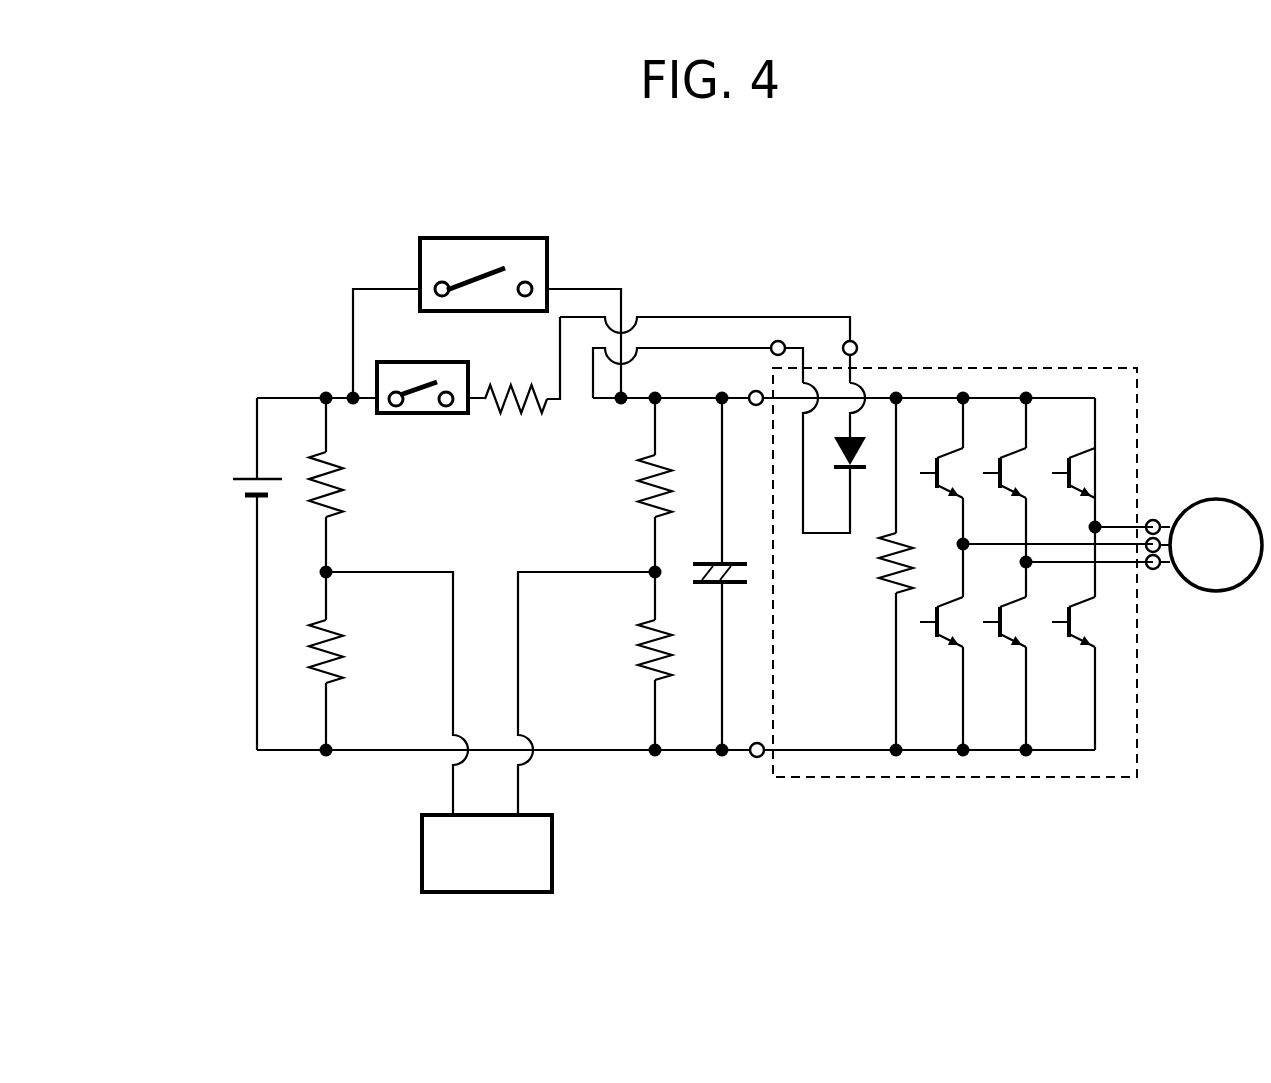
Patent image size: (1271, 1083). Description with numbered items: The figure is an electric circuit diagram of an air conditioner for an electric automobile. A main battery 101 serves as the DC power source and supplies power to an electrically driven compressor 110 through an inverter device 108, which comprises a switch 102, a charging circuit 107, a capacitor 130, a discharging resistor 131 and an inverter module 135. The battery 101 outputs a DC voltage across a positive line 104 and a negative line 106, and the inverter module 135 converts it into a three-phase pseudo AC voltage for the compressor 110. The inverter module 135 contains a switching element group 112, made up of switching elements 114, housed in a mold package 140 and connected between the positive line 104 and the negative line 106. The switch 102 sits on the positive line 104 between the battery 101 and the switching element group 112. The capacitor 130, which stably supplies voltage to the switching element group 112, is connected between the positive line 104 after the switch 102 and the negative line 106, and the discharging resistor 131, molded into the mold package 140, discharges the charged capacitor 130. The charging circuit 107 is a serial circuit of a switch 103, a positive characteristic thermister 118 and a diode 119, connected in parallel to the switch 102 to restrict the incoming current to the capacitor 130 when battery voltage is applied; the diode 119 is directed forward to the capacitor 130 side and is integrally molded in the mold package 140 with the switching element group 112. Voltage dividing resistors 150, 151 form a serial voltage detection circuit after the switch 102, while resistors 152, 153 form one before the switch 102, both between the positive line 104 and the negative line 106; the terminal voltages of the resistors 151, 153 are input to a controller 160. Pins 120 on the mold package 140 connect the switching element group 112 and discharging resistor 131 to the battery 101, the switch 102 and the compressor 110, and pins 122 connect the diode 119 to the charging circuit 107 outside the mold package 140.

The main battery 101 is at (233, 493).
The switch 102 is at (437, 255).
The switch 103 is at (392, 385).
The positive line 104 is at (275, 395).
The negative line 106 is at (268, 752).
The charging circuit 107 is at (469, 428).
The inverter device 108 is at (950, 305).
The electrically driven compressor 110 is at (1215, 592).
The switching element group 112 is at (1108, 386).
The switching element 114 is at (1015, 443).
The positive characteristic thermister 118 is at (520, 390).
The diode 119 is at (860, 432).
The pin 120 is at (755, 391).
The pin 122 is at (778, 341).
The capacitor 130 is at (707, 590).
The discharging resistor 131 is at (887, 595).
The inverter module 135 is at (1078, 798).
The mold package 140 is at (1137, 720).
The voltage dividing resistor 150 is at (668, 452).
The voltage dividing resistor 151 is at (642, 675).
The voltage dividing resistor 152 is at (310, 474).
The voltage dividing resistor 153 is at (313, 645).
The controller 160 is at (435, 838).